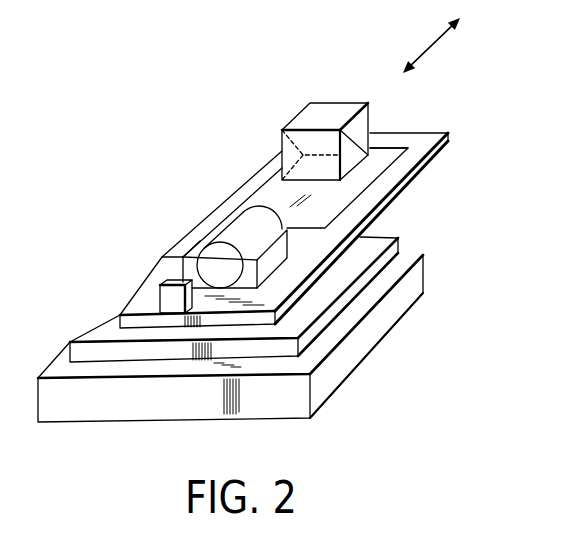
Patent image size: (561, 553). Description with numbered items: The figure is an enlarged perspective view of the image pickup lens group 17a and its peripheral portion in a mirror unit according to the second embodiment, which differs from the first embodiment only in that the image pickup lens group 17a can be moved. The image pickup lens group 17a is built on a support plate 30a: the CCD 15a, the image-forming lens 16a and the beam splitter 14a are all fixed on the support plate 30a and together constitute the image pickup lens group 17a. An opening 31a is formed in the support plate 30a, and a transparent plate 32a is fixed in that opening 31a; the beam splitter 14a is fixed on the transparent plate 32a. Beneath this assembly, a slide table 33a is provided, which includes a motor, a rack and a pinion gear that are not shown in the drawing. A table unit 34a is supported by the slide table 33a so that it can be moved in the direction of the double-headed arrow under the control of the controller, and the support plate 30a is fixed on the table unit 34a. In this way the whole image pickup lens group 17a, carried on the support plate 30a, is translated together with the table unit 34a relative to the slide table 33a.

The beam splitter 14a is at (292, 120).
The CCD 15a is at (163, 297).
The image-forming lens 16a is at (228, 216).
The image pickup lens group 17a is at (227, 73).
The support plate 30a is at (449, 133).
The opening 31a is at (404, 167).
The transparent plate 32a is at (388, 157).
The slide table 33a is at (424, 272).
The table unit 34a is at (399, 236).